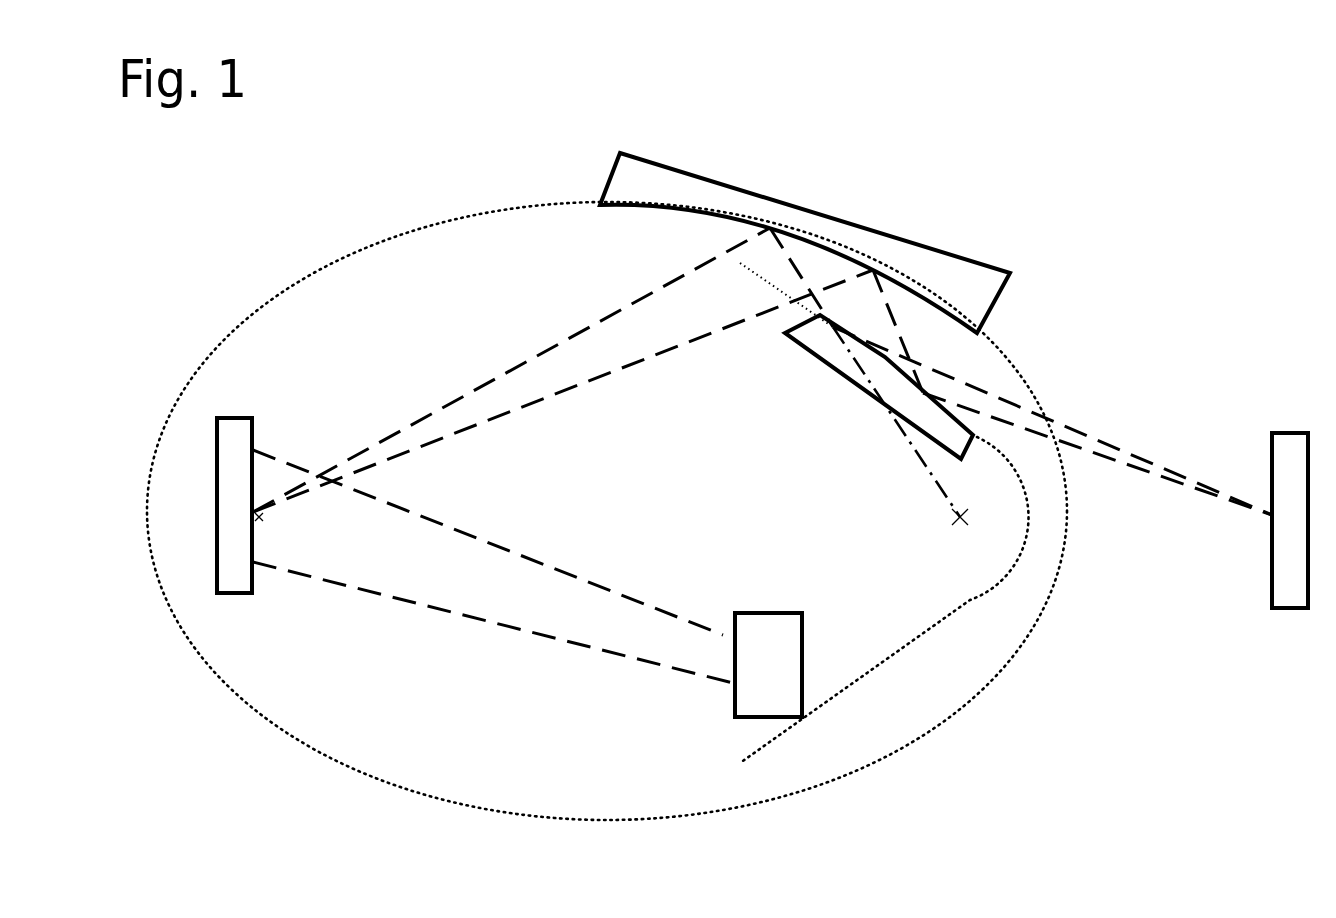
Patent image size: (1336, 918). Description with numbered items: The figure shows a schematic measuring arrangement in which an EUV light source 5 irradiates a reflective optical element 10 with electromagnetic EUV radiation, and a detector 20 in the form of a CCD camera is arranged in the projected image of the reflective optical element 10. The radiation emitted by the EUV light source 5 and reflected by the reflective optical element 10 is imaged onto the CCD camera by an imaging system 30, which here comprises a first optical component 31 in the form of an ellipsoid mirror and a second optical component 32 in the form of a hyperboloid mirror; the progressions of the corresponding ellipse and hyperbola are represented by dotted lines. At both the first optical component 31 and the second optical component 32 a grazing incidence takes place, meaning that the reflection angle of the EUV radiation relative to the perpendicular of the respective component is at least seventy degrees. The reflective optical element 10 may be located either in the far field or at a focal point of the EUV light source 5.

The EUV light source 5 is at (768, 665).
The reflective optical element 10 is at (230, 467).
The detector 20 is at (1287, 562).
The imaging system 30 is at (1115, 360).
The first optical component 31 is at (658, 187).
The second optical component 32 is at (817, 343).